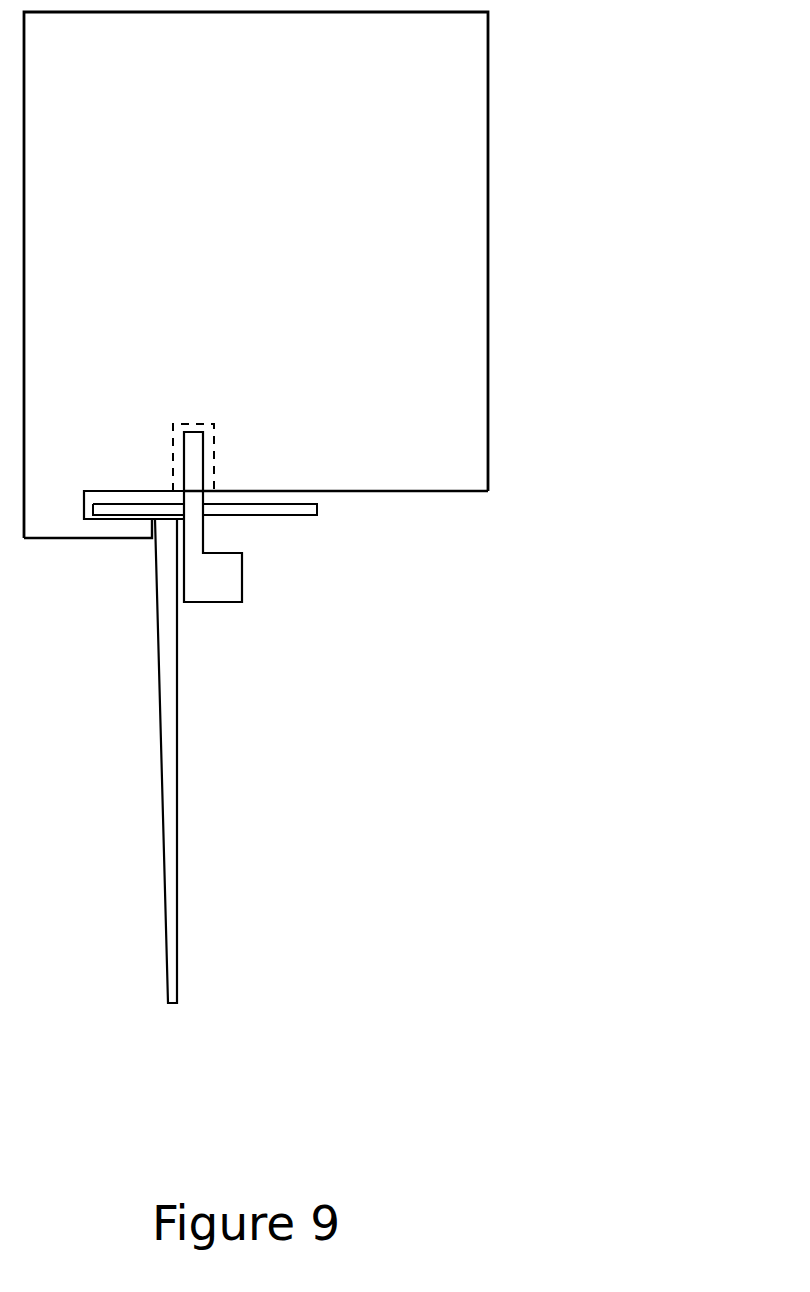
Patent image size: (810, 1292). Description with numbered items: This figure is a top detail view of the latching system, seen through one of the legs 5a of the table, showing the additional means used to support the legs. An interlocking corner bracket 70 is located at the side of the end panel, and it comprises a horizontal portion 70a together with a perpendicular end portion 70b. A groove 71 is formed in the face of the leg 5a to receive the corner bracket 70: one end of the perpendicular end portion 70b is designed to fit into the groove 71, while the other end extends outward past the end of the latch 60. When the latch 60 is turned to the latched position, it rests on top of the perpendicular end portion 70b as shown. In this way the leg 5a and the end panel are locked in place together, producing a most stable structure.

The housing body 5a is at (465, 226).
The interlocking corner bracket 70 is at (257, 691).
The horizontal portion 70a is at (197, 727).
The perpendicular end portion 70b is at (303, 525).
The groove 71 is at (123, 490).
The latch 60 is at (247, 608).